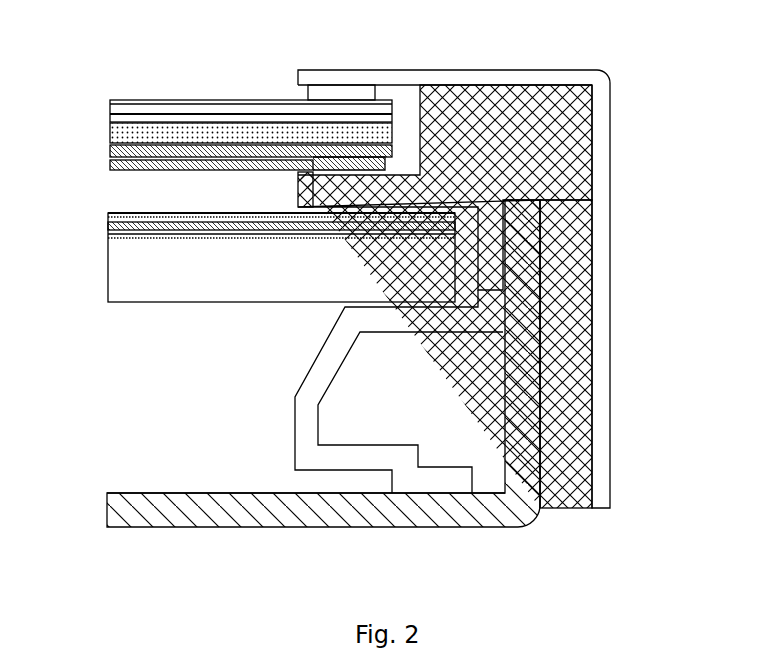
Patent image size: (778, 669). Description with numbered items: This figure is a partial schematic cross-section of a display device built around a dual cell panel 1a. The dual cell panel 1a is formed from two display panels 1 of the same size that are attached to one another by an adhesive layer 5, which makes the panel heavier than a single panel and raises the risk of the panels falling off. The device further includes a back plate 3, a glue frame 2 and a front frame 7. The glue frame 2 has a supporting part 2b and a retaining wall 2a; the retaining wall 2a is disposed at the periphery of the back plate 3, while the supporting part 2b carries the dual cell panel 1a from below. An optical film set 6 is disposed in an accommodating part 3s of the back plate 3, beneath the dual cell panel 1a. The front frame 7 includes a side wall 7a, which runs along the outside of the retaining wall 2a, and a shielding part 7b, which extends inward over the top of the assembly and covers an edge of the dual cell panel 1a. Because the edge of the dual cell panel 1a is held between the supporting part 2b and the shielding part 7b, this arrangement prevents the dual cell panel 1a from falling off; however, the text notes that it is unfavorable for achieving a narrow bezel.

The display panel 1 is at (102, 120).
The dual cell panel 1a is at (220, 153).
The adhesive layer 5 is at (241, 133).
The optical film set 6 is at (104, 300).
The glue frame 2 is at (503, 296).
The retaining wall 2a is at (674, 222).
The supporting part 2b is at (403, 192).
The back plate 3 is at (323, 392).
The accommodating part 3s is at (215, 473).
The front frame 7 is at (513, 265).
The side wall 7a is at (639, 296).
The shielding part 7b is at (553, 72).